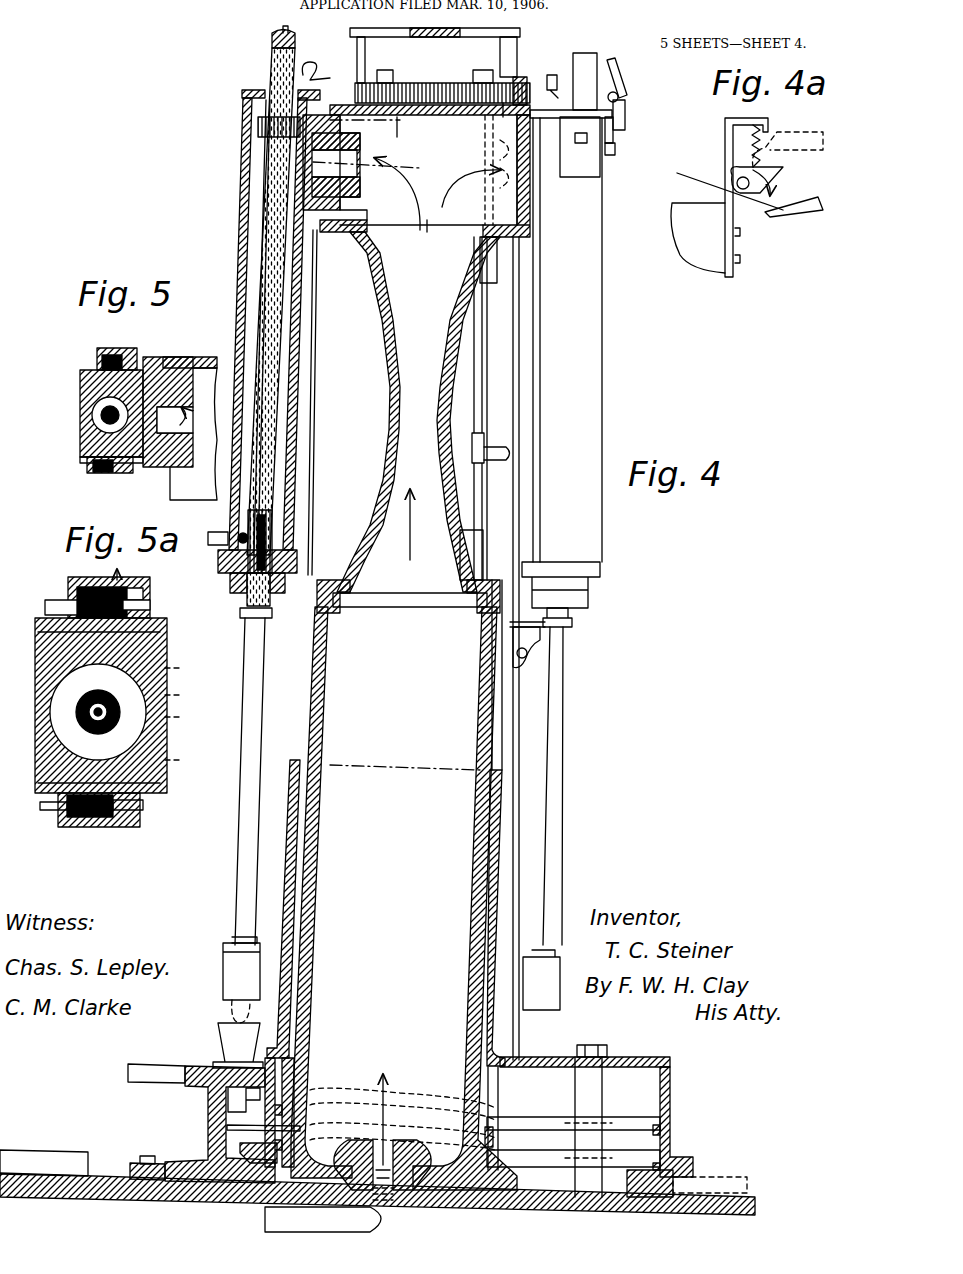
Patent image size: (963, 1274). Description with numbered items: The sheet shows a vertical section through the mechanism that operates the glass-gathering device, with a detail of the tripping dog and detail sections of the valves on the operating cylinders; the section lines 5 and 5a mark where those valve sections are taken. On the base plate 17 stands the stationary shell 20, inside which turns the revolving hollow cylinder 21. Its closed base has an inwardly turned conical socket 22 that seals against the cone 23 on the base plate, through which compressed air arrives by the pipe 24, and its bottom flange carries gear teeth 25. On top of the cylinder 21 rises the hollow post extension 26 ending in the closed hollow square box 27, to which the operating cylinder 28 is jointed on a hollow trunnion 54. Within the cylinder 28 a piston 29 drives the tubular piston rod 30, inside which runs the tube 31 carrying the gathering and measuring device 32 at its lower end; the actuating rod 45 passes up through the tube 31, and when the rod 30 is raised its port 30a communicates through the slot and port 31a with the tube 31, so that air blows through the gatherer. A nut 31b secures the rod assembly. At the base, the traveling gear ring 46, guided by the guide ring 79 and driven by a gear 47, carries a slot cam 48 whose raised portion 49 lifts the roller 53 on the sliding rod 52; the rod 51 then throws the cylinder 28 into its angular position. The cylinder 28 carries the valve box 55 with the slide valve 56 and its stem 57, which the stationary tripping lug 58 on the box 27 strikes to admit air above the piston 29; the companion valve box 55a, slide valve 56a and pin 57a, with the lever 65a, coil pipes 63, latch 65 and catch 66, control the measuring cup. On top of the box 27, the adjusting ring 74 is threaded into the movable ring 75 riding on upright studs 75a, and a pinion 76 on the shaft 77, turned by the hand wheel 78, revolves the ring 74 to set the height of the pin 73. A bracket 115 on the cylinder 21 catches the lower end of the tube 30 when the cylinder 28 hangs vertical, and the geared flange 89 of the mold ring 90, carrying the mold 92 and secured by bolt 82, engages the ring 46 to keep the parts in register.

In FIG. 4, the base plate 17 is at (82, 1185).
In FIG. 4, the stationary shell 20 is at (508, 823).
In FIG. 4, the revolving hollow cylinder 21 is at (480, 722).
In FIG. 4, the conical socket 22 is at (420, 1143).
In FIG. 4, the cone 23 is at (398, 1195).
In FIG. 4, the pipe 24 is at (323, 1220).
In FIG. 4, the gear teeth 25 is at (258, 1225).
In FIG. 4, the hollow post extension 26 is at (408, 422).
In FIG. 4, the hollow square box 27 is at (416, 157).
In FIG. 4A, the hollow square box 27 is at (698, 238).
In FIG. 5, the hollow square box 27 is at (193, 434).
In FIG. 4, the cylinder 28 is at (240, 252).
In FIG. 5, the cylinder 28 is at (80, 408).
In FIG. 5A, the cylinder 28 is at (109, 705).
In FIG. 4, the piston 29 is at (258, 128).
In FIG. 4, the tubular piston rod 30 is at (275, 68).
In FIG. 5A, the tubular piston rod 30 is at (92, 728).
In FIG. 4, the port 30a is at (272, 530).
In FIG. 4, the tube 31 is at (280, 40).
In FIG. 5A, the tube 31 is at (120, 700).
In FIG. 4, the slot and port 31a is at (268, 185).
In FIG. 4, the nut 31b is at (262, 512).
In FIG. 4, the gathering and measuring device 32 is at (235, 965).
In FIG. 4, the actuating rod 45 is at (285, 28).
In FIG. 5A, the actuating rod 45 is at (118, 714).
In FIG. 4, the traveling gear ring 46 is at (672, 1095).
In FIG. 4, the gear 47 is at (690, 1178).
In FIG. 4, the slot cam 48 is at (540, 1150).
In FIG. 4, the raised portion 49 is at (335, 1090).
In FIG. 4, the rod 51 is at (318, 410).
In FIG. 4, the sliding rod 52 is at (302, 868).
In FIG. 4, the roller 53 is at (226, 1128).
In FIG. 4, the hollow trunnion 54 is at (350, 172).
In FIG. 5, the hollow trunnion 54 is at (178, 400).
In FIG. 4, the valve box 55 is at (590, 172).
In FIG. 5, the valve box 55 is at (125, 352).
In FIG. 5A, the valve box 55 is at (152, 580).
In FIG. 5, the valve box 55a is at (92, 467).
In FIG. 5A, the valve box 55a is at (142, 822).
In FIG. 5, the slide valve 56 is at (103, 355).
In FIG. 5A, the slide valve 56 is at (72, 590).
In FIG. 5, the slide valve 56a is at (105, 473).
In FIG. 5A, the slide valve 56a is at (85, 827).
In FIG. 4, the stem 57 is at (612, 140).
In FIG. 5A, the stem 57 is at (153, 603).
In FIG. 5A, the pin 57a is at (145, 803).
In FIG. 4, the tripping lug 58 is at (550, 120).
In FIG. 4A, the tripping lug 58 is at (757, 175).
In FIG. 4, the coil pipes 63 is at (618, 150).
In FIG. 4, the latch 65 is at (628, 80).
In FIG. 4, the lever 65a is at (640, 70).
In FIG. 4, the catch 66 is at (627, 118).
In FIG. 4, the pin 73 is at (318, 80).
In FIG. 4, the adjusting ring 74 is at (372, 80).
In FIG. 4, the movable ring 75 is at (503, 117).
In FIG. 4, the upright studs 75a is at (365, 50).
In FIG. 4, the pinion 76 is at (490, 83).
In FIG. 4, the shaft 77 is at (490, 320).
In FIG. 4, the hand wheel 78 is at (500, 453).
In FIG. 4, the guide ring 79 is at (650, 1198).
In FIG. 4, the bolt 82 is at (592, 1045).
In FIG. 4, the geared flange 89 is at (200, 1200).
In FIG. 4, the ring 90 is at (210, 1110).
In FIG. 4, the mold 92 is at (238, 1045).
In FIG. 4, the bracket 115 is at (530, 633).
In FIG. 4, the section line 5 is at (232, 156).
In FIG. 4, the section line 5a is at (218, 108).